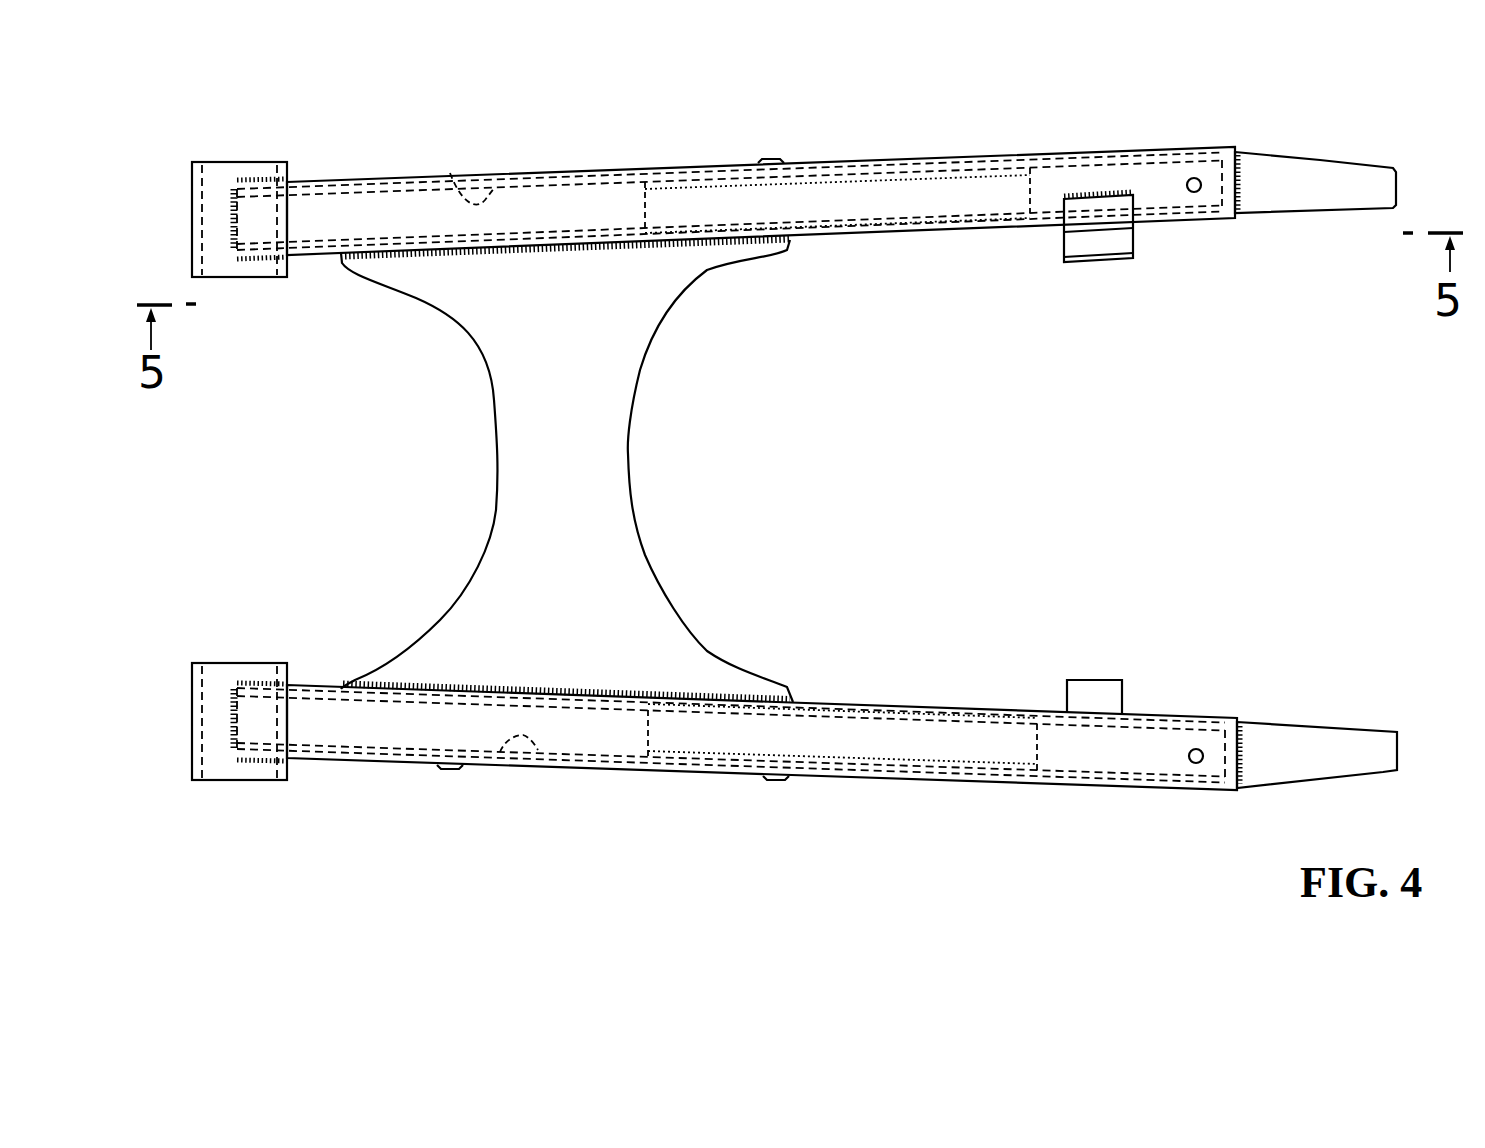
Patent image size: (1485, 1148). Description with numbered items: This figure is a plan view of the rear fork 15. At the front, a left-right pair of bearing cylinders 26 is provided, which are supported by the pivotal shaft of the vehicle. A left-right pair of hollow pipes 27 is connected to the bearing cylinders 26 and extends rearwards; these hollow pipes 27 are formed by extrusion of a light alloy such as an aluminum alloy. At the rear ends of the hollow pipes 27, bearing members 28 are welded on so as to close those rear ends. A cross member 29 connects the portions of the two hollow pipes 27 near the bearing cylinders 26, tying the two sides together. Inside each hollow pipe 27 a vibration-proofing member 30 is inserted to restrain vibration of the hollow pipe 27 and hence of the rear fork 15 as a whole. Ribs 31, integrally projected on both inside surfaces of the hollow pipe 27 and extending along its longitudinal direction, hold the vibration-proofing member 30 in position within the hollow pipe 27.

The rear fork 15 is at (530, 168).
The bearing cylinder 26 is at (218, 277).
The hollow pipe 27 is at (803, 163).
The bearing member 28 is at (1363, 175).
The cross member 29 is at (603, 519).
The vibration-proofing member 30 is at (941, 236).
The rib 31 is at (437, 222).